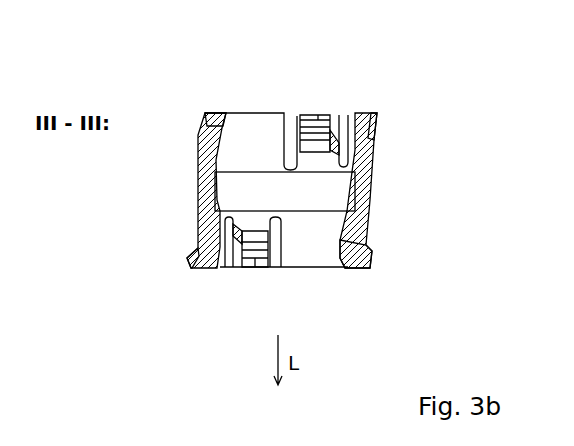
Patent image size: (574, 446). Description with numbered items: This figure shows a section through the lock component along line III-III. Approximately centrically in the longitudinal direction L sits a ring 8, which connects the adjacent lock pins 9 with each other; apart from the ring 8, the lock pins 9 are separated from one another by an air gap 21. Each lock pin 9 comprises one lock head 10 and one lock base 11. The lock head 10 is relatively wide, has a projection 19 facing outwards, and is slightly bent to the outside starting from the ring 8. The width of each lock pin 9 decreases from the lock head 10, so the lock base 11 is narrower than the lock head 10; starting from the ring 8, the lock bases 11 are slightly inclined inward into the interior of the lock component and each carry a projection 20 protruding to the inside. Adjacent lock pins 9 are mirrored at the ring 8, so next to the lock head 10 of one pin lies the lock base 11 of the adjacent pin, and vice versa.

The ring 8 is at (345, 181).
The lock pin 9 is at (275, 115).
The lock head 10 is at (252, 113).
The lock base 11 is at (198, 137).
The projection 19 is at (378, 116).
The projection 20 is at (233, 113).
The air gap 21 is at (297, 118).